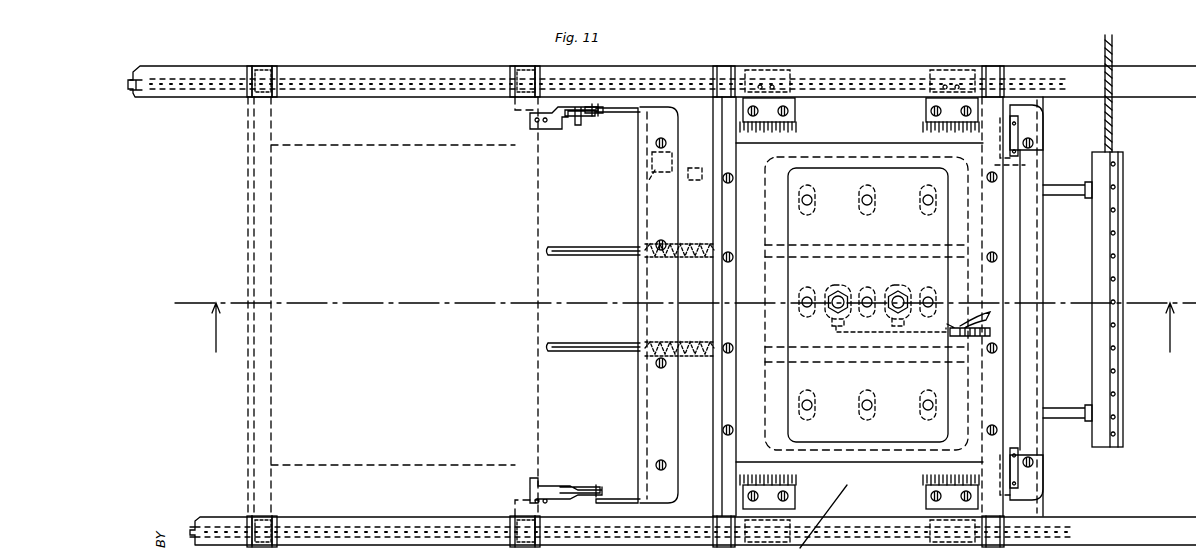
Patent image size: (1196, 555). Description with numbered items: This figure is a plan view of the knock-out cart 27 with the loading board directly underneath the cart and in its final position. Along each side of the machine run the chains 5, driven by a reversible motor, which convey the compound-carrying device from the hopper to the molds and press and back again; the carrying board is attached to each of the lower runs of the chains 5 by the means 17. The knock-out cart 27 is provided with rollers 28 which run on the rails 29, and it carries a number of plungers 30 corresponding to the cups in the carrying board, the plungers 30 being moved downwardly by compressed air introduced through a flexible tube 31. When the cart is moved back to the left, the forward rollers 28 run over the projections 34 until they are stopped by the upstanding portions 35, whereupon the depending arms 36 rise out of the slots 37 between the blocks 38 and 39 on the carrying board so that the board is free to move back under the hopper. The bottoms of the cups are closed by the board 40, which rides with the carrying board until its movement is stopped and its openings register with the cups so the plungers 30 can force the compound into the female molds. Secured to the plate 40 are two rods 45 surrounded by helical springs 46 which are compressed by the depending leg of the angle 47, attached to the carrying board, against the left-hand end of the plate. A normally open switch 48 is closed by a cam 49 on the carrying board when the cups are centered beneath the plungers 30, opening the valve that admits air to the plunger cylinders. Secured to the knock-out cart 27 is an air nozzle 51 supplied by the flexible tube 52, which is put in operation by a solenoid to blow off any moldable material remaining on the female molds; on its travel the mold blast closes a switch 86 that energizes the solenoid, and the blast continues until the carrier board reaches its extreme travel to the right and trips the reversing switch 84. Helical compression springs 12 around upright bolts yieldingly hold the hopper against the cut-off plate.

The chains 5 is at (1041, 67).
The helical compression springs 12 is at (685, 349).
The attaching means 17 is at (768, 126).
The knock-out cart 27 is at (265, 212).
The rollers 28 is at (277, 68).
The rails 29 is at (887, 65).
The plungers 30 is at (812, 200).
The flexible tube 31 is at (974, 332).
The projections 34 is at (284, 96).
The upstanding portions 35 is at (250, 65).
The depending arms 36 is at (1026, 132).
The slots 37 is at (1067, 301).
The block 38 is at (1020, 152).
The block 39 is at (1028, 170).
The board 40 is at (756, 406).
The rods 45 is at (600, 250).
The helical springs 46 is at (700, 230).
The angle 47 is at (644, 285).
The switch 48 is at (564, 132).
The cam 49 is at (610, 116).
The air nozzle 51 is at (1124, 246).
The flexible tube 52 is at (1114, 129).
The reversing switch 84 is at (556, 478).
The switch 86 is at (684, 154).